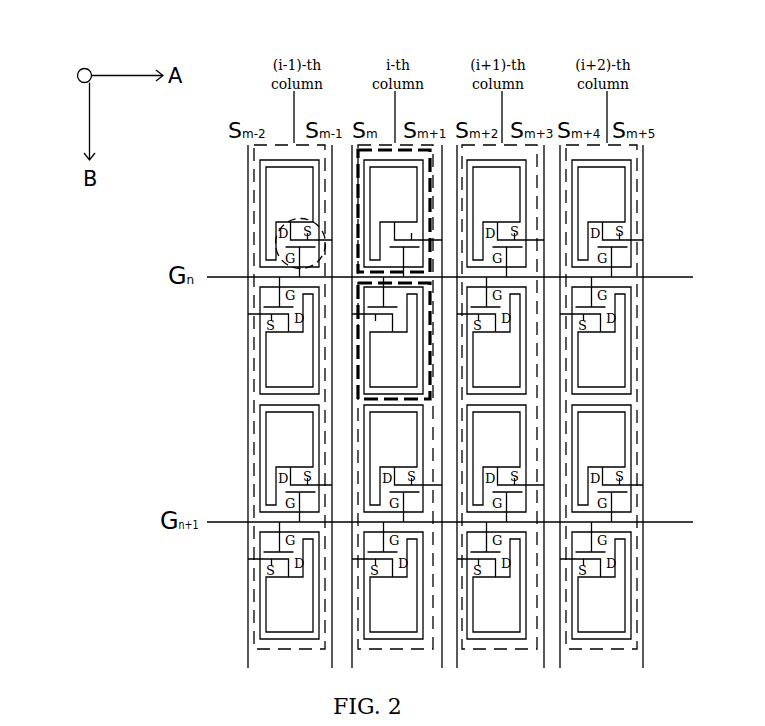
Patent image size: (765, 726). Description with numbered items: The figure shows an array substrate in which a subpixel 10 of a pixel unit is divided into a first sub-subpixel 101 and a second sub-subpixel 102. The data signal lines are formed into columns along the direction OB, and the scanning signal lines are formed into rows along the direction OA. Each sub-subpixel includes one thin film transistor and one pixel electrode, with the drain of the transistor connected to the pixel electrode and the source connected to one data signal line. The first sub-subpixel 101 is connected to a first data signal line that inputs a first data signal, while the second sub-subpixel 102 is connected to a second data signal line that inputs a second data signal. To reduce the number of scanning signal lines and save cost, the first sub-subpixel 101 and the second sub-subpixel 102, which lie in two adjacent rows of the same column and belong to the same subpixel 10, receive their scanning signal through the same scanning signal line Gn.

The subpixel 10 is at (103, 215).
The first sub-subpixel 101 is at (360, 214).
The second sub-subpixel 102 is at (360, 336).